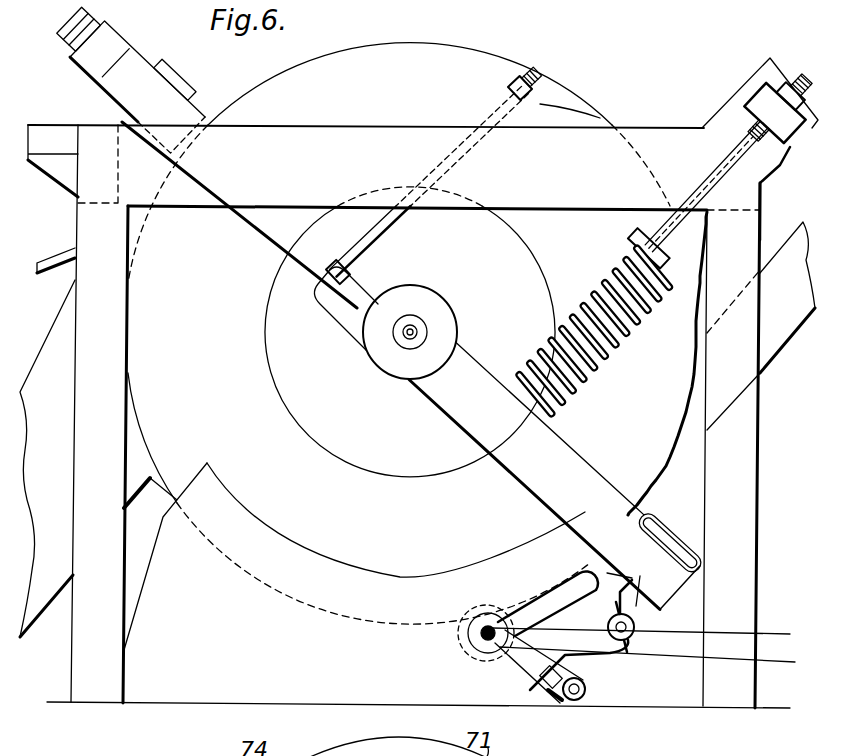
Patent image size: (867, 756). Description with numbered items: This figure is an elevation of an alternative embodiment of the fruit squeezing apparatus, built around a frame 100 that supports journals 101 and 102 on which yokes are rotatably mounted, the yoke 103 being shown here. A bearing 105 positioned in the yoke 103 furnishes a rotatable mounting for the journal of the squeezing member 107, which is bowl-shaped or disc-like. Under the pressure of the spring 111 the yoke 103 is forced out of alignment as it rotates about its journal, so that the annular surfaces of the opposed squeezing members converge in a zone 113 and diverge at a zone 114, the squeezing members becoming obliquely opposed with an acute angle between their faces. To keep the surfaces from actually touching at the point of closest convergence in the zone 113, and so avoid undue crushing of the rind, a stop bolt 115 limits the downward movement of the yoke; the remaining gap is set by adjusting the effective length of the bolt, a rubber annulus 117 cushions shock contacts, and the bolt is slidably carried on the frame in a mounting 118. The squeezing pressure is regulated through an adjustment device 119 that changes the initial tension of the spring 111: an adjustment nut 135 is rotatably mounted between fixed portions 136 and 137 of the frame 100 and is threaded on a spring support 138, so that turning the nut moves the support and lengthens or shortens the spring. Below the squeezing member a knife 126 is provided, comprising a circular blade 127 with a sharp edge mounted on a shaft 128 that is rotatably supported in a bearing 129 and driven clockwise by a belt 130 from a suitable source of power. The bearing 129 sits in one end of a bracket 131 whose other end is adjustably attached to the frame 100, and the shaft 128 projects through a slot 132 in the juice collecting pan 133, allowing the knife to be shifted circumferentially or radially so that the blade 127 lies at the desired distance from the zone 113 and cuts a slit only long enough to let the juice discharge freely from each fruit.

The frame 100 is at (82, 367).
The journal 101 is at (113, 40).
The journal 102 is at (677, 565).
The yoke 103 is at (467, 373).
The bearing 105 is at (400, 340).
The squeezing member 107 is at (418, 57).
The spring 111 is at (636, 312).
The zone of closest convergence 113 is at (212, 549).
The zone of divergence 114 is at (566, 98).
The stop bolt 115 is at (393, 232).
The rubber annulus 117 is at (340, 313).
The mounting 118 is at (474, 110).
The adjustment device 119 is at (752, 90).
The knife 126 is at (512, 660).
The circular blade 127 is at (462, 628).
The shaft 128 is at (495, 617).
The bearing 129 is at (480, 640).
The belt 130 is at (660, 657).
The bracket 131 is at (543, 680).
The slot 132 is at (585, 570).
The juice collecting pan 133 is at (473, 690).
The adjustment nut 135 is at (790, 150).
The fixed portion of the frame 136 is at (777, 445).
The fixed portion of the frame 137 is at (785, 85).
The spring support 138 is at (735, 160).